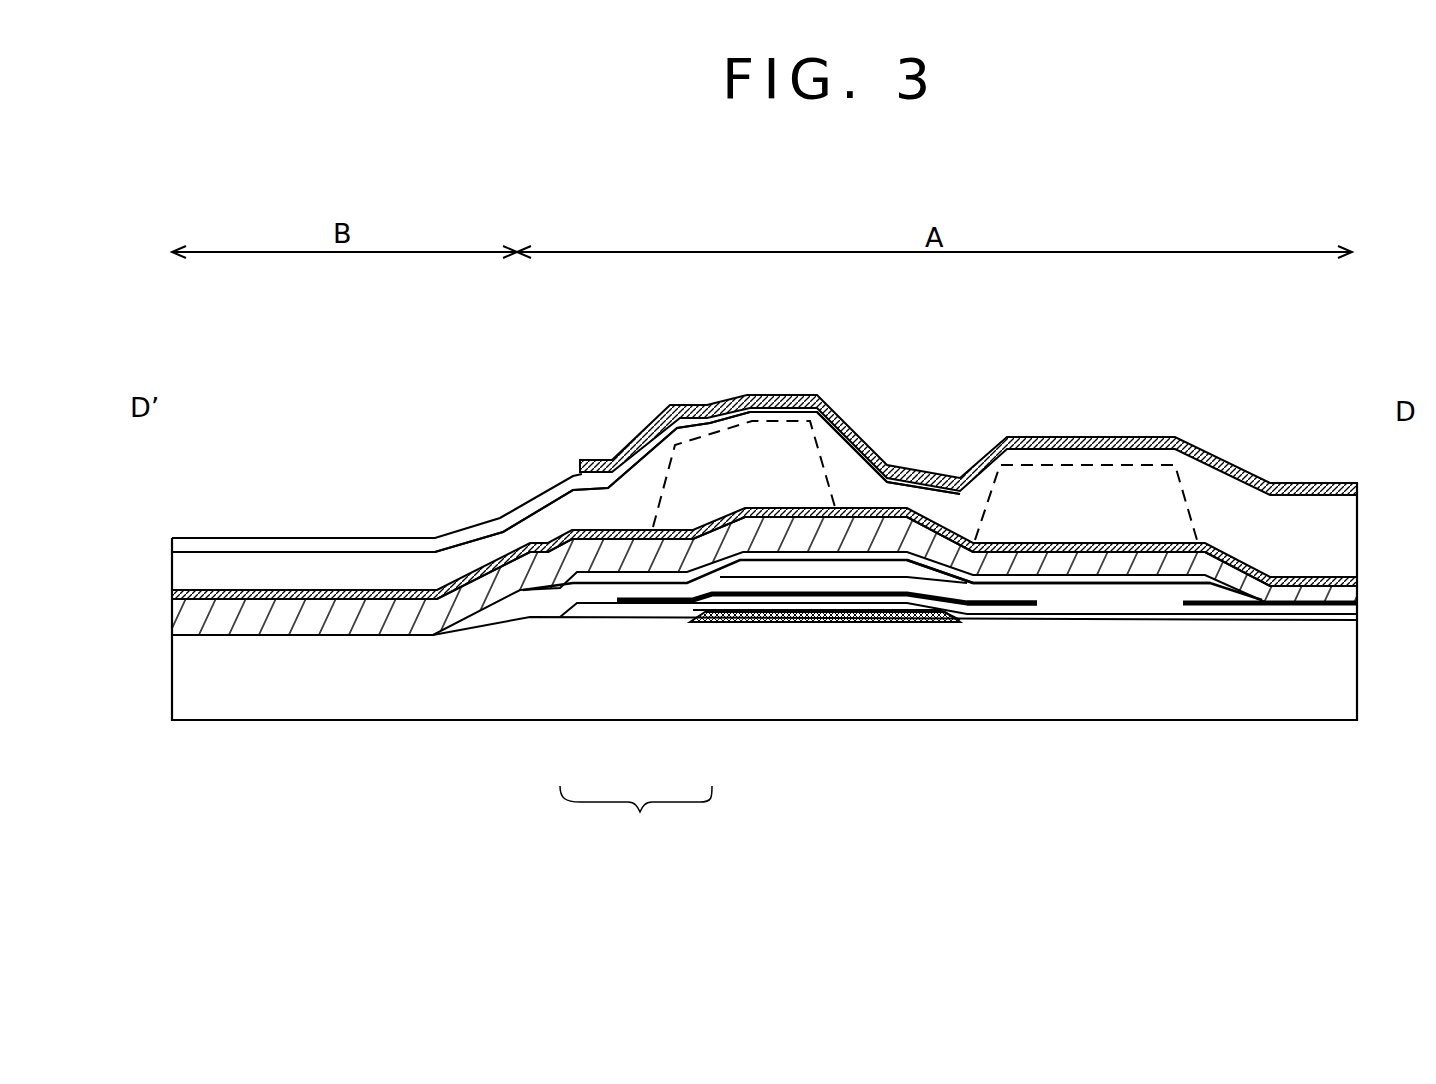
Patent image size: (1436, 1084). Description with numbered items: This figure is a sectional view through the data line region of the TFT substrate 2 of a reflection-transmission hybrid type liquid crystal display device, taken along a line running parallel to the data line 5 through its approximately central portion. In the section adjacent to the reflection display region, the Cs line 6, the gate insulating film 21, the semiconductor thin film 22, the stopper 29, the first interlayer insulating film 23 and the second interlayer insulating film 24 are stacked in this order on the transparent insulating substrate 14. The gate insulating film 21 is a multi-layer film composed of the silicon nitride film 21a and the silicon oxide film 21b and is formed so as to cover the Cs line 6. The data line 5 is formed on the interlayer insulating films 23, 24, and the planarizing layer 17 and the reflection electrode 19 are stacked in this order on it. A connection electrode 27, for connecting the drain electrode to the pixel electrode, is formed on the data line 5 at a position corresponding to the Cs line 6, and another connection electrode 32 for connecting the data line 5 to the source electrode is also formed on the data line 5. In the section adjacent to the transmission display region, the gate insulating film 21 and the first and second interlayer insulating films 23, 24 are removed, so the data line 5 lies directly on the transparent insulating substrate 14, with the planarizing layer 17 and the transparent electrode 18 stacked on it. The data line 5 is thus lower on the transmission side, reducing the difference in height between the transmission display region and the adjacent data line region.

The TFT substrate 2 is at (190, 380).
The data line 5 is at (545, 540).
The Cs line 6 is at (851, 622).
The transparent insulating substrate 14 is at (1330, 663).
The planarizing layer 17 is at (630, 500).
The transparent electrode 18 is at (316, 547).
The reflection electrode 19 is at (728, 402).
The gate insulating film 21 is at (636, 815).
The silicon nitride film 21a is at (600, 612).
The silicon oxide film 21b is at (657, 607).
The semiconductor thin film 22 is at (1010, 603).
The first interlayer insulating film 23 is at (928, 585).
The second interlayer insulating film 24 is at (958, 572).
The connection electrode 27 is at (780, 440).
The stopper 29 is at (857, 590).
The connection electrode 32 is at (1088, 485).